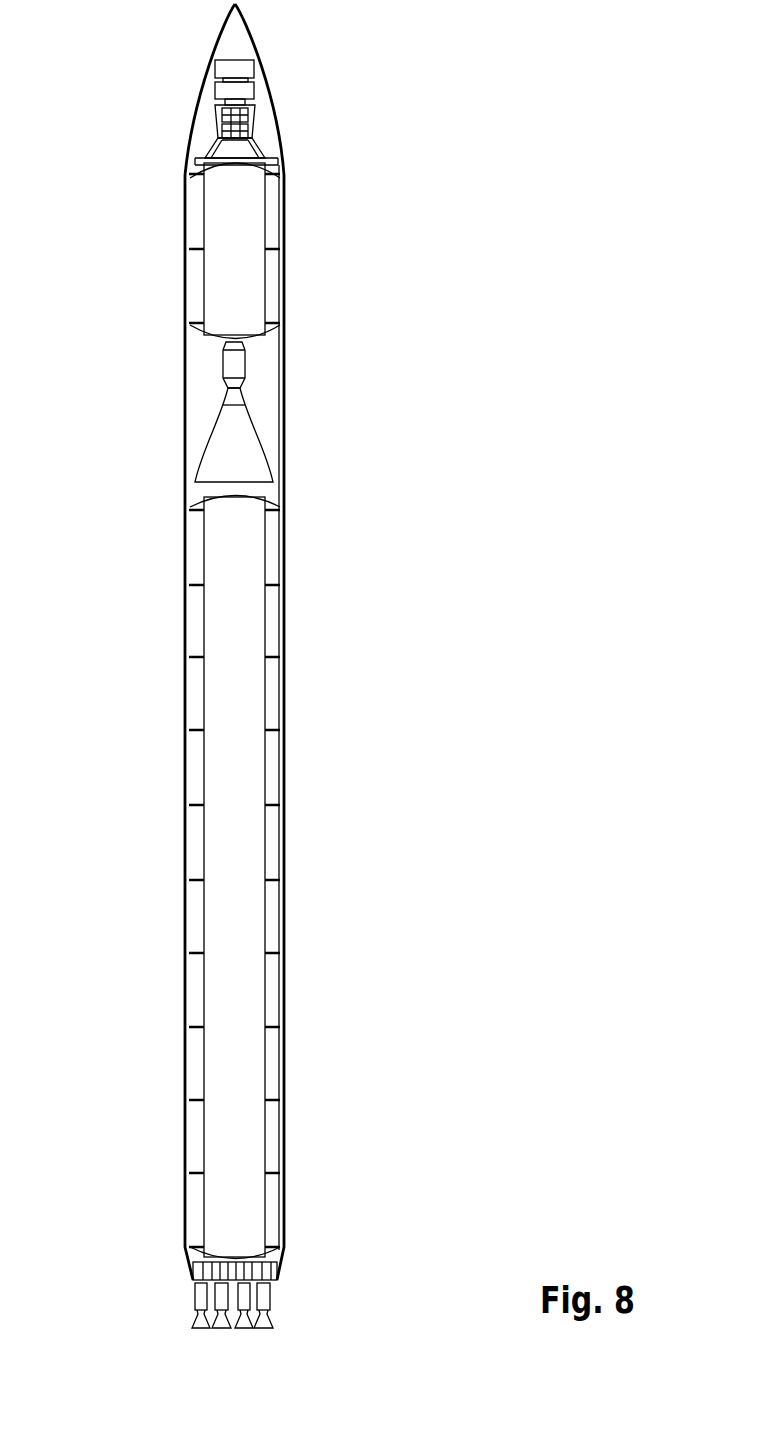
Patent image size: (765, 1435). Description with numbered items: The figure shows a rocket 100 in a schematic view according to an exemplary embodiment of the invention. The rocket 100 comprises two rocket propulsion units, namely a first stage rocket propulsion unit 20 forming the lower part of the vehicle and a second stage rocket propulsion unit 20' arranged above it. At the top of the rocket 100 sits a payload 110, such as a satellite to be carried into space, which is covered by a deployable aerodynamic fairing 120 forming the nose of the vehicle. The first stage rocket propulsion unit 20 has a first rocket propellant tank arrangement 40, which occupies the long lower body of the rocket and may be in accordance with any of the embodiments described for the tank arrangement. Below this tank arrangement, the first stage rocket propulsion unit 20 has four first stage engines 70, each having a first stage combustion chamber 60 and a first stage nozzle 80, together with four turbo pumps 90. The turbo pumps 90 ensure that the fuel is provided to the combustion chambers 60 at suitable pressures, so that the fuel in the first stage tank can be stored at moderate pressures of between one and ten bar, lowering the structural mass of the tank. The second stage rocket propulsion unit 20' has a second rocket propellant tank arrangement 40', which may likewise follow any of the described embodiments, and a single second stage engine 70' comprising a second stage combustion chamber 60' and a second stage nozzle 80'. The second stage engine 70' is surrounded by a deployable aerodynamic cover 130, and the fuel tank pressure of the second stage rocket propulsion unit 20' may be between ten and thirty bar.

The rocket 100 is at (314, 668).
The deployable aerodynamic fairing 120 is at (258, 43).
The payload 110 is at (243, 117).
The second stage rocket propulsion unit 20' is at (304, 322).
The second rocket propellant tank arrangement 40' is at (272, 251).
The second stage engine 70' is at (305, 410).
The second stage combustion chamber 60' is at (289, 365).
The second stage nozzle 80' is at (275, 426).
The deployable aerodynamic cover 130 is at (185, 383).
The first stage rocket propulsion unit 20 is at (235, 914).
The first rocket propellant tank arrangement 40 is at (268, 877).
The turbo pump 90 is at (200, 1269).
The first stage engine 70 is at (232, 1297).
The first stage combustion chamber 60 is at (233, 1289).
The first stage nozzle 80 is at (233, 1315).